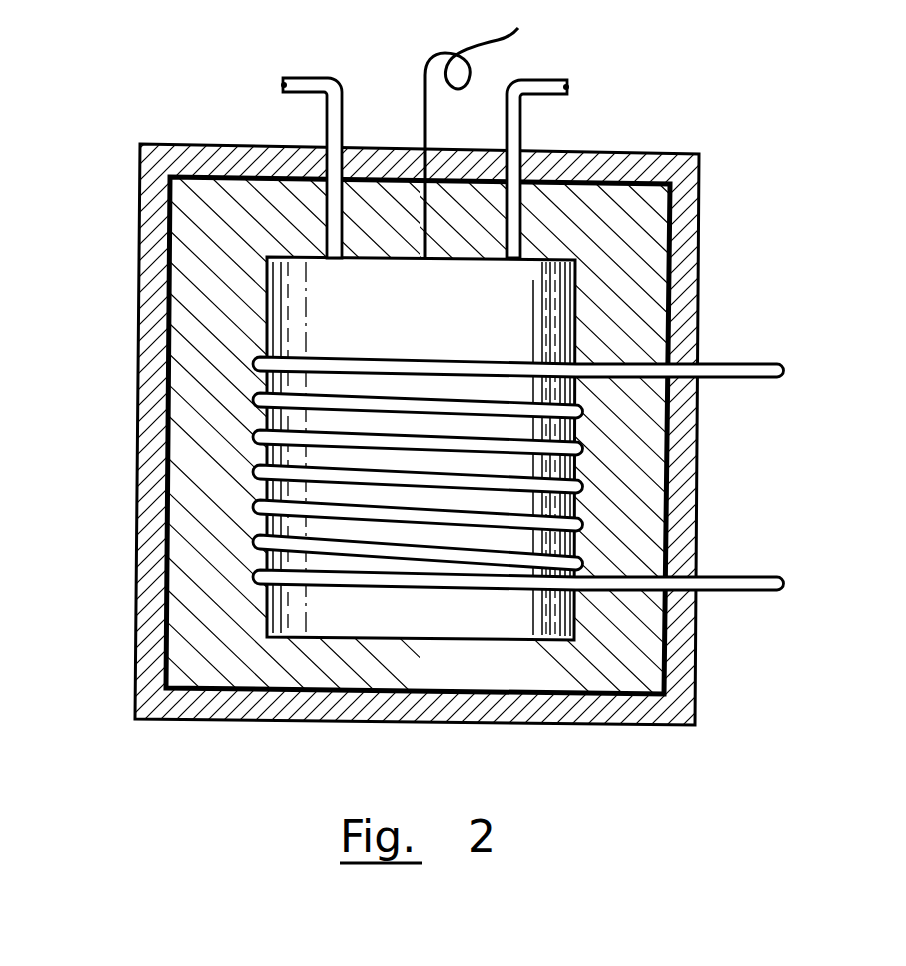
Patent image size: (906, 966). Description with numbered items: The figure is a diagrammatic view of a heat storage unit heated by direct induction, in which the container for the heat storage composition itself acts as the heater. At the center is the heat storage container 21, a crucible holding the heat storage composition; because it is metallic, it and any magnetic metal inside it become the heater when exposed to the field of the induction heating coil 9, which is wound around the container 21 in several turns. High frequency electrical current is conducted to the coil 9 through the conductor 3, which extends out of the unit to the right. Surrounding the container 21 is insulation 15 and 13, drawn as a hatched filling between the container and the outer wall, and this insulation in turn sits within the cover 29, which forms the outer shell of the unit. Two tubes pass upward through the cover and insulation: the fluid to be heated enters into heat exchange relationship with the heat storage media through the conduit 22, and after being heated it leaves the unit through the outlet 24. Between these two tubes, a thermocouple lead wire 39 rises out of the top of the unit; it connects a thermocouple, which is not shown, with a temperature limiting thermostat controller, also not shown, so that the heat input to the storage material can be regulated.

The conductor 3 is at (712, 364).
The induction heating coil 9 is at (258, 398).
The insulation 13 is at (690, 167).
The insulation 15 is at (453, 435).
The heat storage container 21 is at (575, 283).
The conduit 22 is at (580, 88).
The outlet 24 is at (277, 85).
The cover 29 is at (357, 434).
The thermocouple lead wire 39 is at (425, 73).